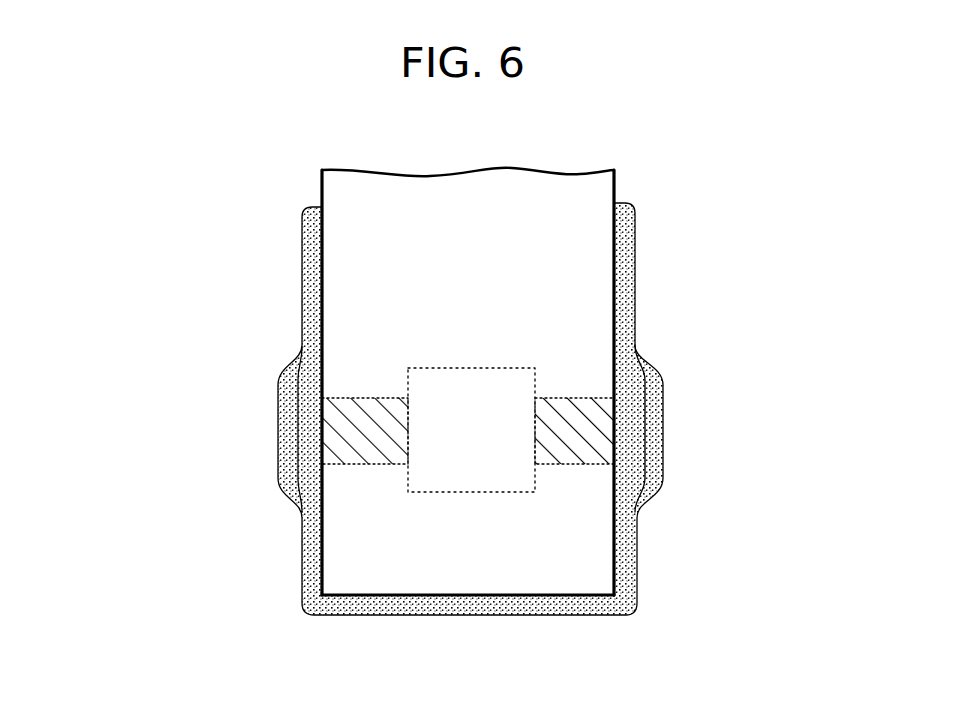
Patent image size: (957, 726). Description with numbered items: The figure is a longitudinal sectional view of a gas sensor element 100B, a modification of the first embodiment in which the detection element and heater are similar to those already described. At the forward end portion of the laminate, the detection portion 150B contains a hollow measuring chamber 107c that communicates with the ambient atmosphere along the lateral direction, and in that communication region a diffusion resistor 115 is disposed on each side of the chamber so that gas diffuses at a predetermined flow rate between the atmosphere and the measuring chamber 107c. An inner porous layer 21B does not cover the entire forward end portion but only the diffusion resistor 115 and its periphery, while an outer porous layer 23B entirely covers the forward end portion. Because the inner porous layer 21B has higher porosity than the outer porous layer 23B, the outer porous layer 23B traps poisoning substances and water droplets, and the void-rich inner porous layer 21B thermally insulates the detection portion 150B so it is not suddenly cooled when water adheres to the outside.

The gas sensor element 100B is at (708, 230).
The detection portion 150B is at (208, 372).
The outer porous layer 23B is at (650, 345).
The inner porous layer 21B is at (630, 432).
The diffusion resistor 115 is at (372, 464).
The measuring chamber 107c is at (503, 492).